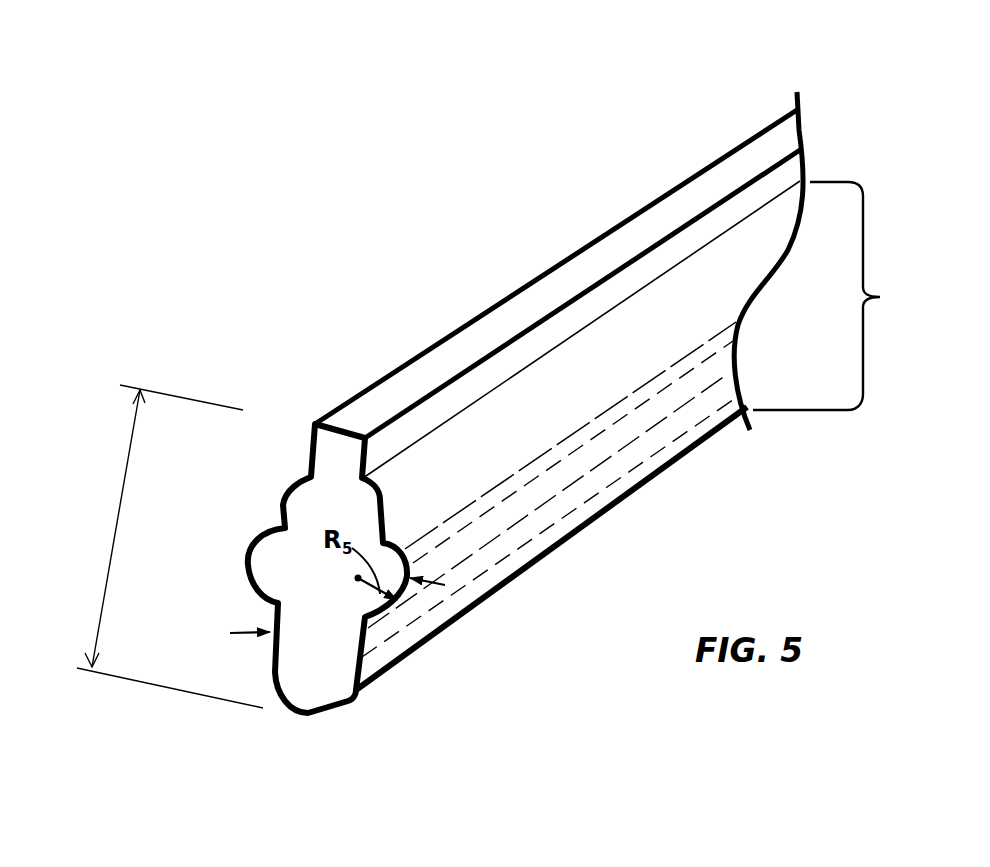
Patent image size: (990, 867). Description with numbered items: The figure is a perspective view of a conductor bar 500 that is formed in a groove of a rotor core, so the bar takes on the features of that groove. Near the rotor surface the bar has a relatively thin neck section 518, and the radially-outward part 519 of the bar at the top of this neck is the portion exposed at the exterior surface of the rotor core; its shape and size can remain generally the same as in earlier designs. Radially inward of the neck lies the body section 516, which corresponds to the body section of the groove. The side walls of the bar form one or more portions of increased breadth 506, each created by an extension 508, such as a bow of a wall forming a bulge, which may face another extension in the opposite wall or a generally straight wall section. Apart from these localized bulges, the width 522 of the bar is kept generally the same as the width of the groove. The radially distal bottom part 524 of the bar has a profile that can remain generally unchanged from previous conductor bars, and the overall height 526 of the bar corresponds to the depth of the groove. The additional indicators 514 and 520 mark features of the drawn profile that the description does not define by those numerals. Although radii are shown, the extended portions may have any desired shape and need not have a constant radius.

The conductor bar 500 is at (302, 303).
The portion of increased breadth 506 is at (253, 530).
The extension 508 is at (402, 545).
The width of lobes 514 is at (247, 561).
The body section 516 is at (883, 298).
The neck section 518 is at (814, 160).
The radially-outward part 519 is at (486, 325).
The transition curve 520 is at (390, 524).
The width 522 is at (371, 634).
The bottom part 524 is at (372, 703).
The height 526 is at (108, 588).